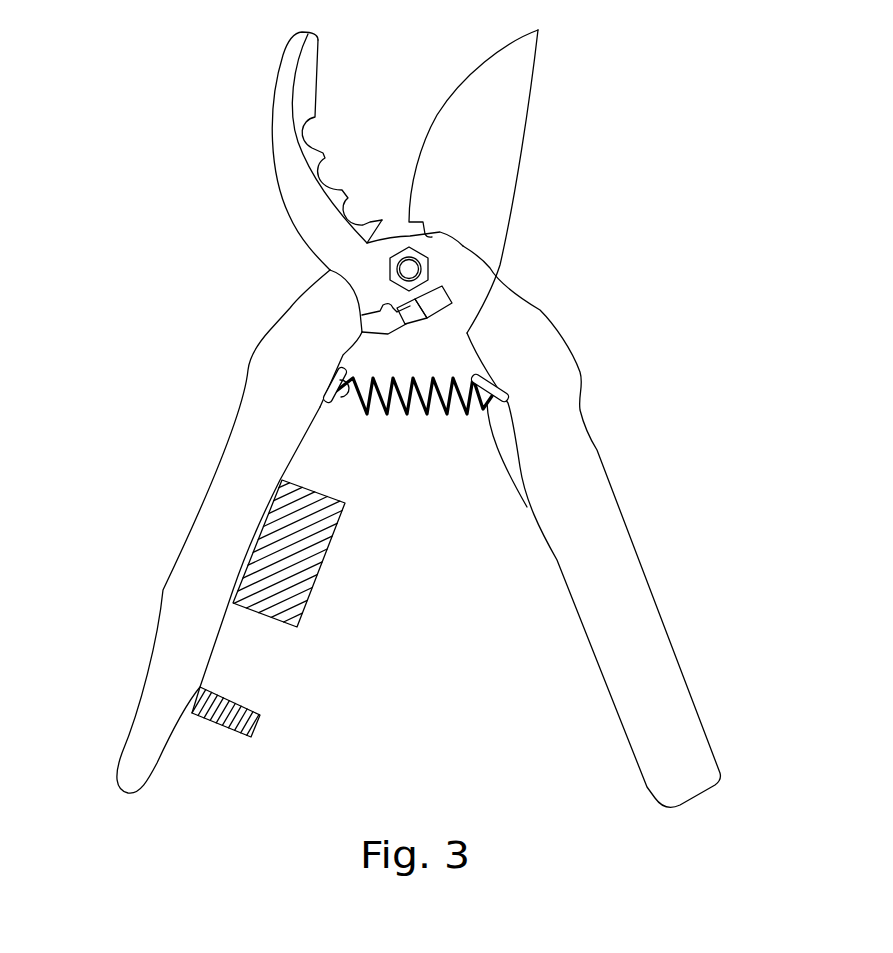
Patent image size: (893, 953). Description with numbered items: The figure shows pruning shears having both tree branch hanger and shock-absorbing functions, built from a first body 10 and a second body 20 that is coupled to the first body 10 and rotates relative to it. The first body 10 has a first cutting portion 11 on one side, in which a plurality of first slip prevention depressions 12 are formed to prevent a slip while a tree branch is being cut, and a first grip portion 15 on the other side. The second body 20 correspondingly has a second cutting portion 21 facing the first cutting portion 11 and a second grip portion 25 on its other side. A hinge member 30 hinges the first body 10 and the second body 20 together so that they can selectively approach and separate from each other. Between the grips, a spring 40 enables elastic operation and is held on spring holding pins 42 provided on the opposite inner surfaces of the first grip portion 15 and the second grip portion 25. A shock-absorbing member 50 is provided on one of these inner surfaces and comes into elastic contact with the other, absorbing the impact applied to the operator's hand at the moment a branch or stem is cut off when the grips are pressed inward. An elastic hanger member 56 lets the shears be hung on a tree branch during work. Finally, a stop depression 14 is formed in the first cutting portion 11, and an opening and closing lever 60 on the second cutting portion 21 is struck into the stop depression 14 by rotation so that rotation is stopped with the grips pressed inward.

The first body 10 is at (589, 418).
The first cutting portion 11 is at (287, 158).
The first slip prevention depressions 12 is at (315, 133).
The stop depression 14 is at (322, 300).
The first grip portion 15 is at (625, 600).
The second body 20 is at (258, 398).
The second cutting portion 21 is at (497, 149).
The second grip portion 25 is at (183, 610).
The hinge member 30 is at (411, 270).
The spring 40 is at (440, 410).
The spring holding pins 42 is at (333, 402).
The shock-absorbing member 50 is at (318, 555).
The elastic hanger member 56 is at (250, 708).
The opening and closing lever 60 is at (437, 300).